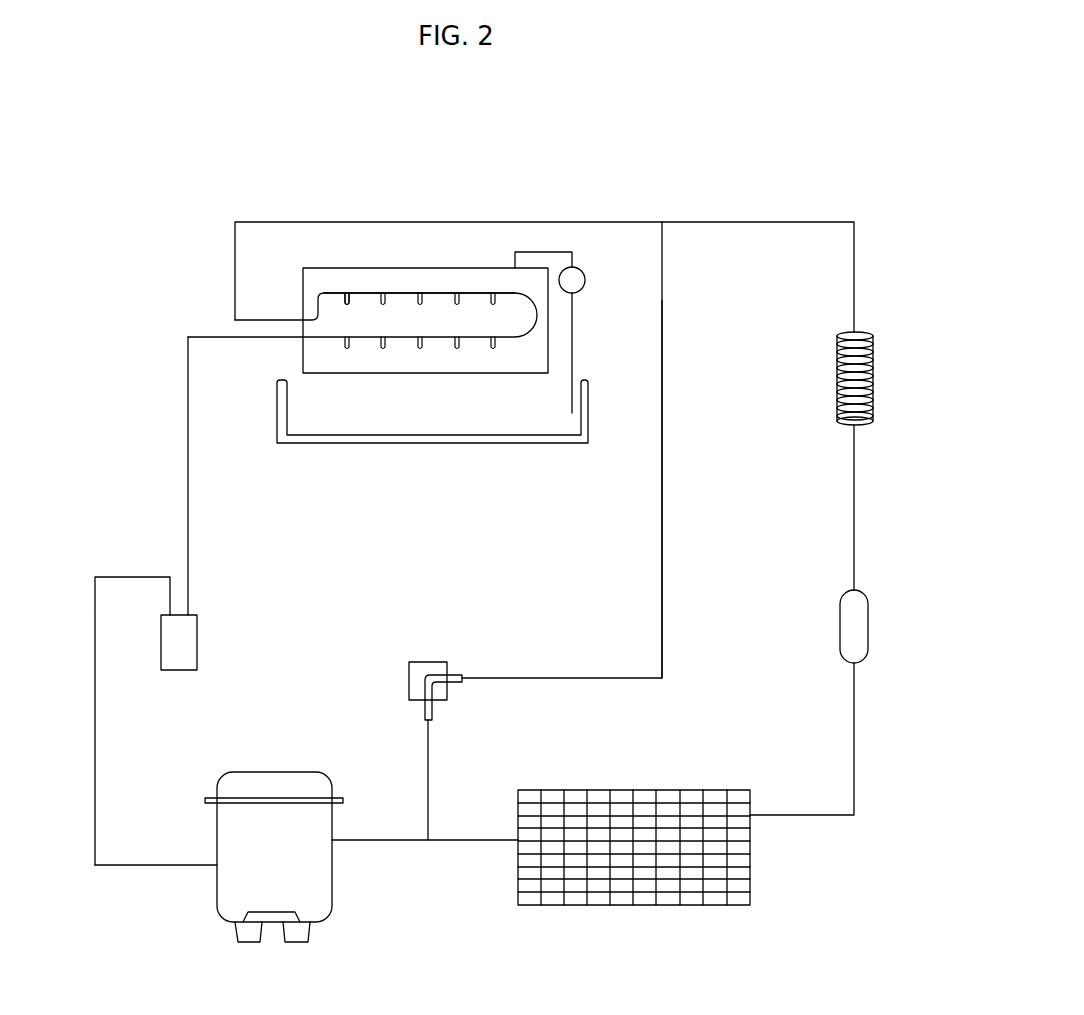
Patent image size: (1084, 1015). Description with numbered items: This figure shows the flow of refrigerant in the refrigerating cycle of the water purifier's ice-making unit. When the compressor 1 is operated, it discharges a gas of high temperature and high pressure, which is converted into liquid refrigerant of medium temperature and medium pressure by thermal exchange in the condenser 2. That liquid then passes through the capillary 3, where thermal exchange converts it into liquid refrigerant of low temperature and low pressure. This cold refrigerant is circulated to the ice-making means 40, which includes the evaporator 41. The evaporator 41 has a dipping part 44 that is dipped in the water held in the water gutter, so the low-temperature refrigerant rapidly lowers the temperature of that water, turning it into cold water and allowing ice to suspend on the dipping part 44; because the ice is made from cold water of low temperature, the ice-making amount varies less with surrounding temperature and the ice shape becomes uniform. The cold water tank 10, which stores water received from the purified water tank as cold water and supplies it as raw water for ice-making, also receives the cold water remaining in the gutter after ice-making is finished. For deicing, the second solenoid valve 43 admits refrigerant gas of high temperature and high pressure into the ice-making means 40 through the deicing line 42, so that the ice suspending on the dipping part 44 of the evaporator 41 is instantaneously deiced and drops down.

The compressor 1 is at (218, 902).
The condenser 2 is at (628, 906).
The capillary 3 is at (875, 385).
The cold water tank 10 is at (547, 444).
The ice-making means 40 is at (457, 296).
The evaporator 41 is at (362, 292).
The deicing line 42 is at (663, 523).
The second solenoid valve 43 is at (420, 662).
The dipping part 44 is at (345, 292).